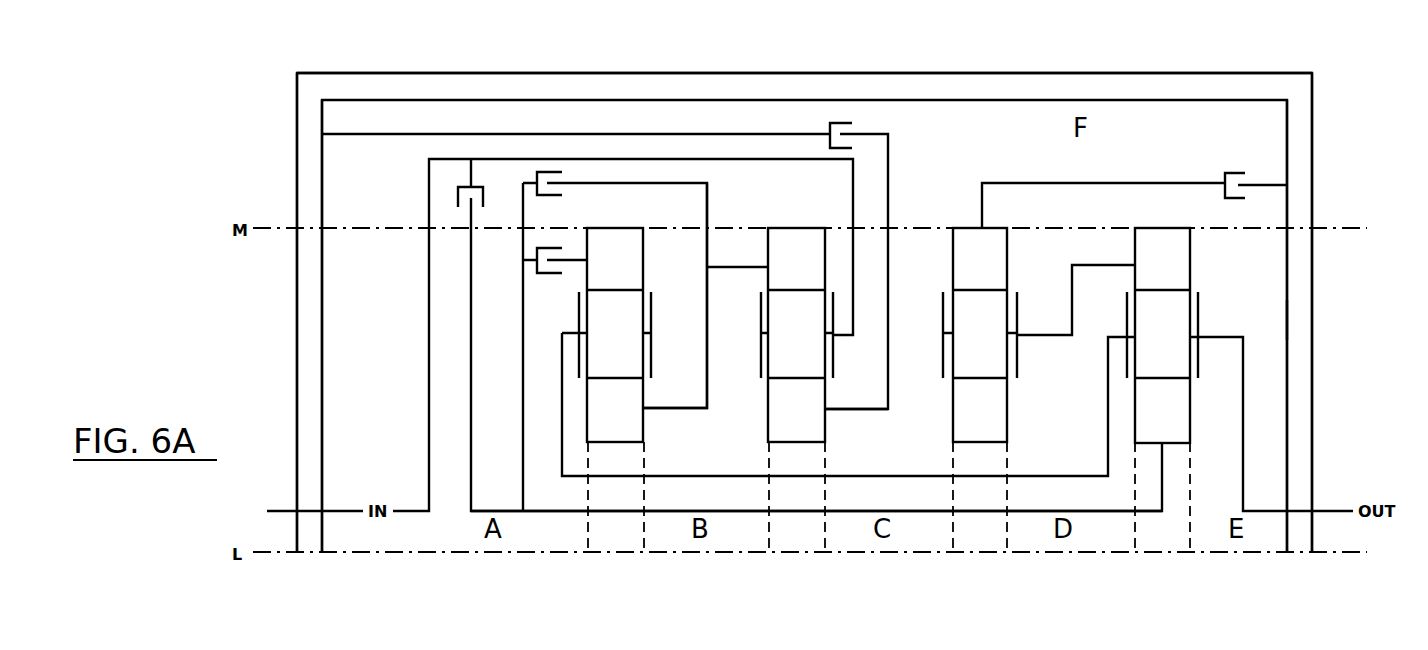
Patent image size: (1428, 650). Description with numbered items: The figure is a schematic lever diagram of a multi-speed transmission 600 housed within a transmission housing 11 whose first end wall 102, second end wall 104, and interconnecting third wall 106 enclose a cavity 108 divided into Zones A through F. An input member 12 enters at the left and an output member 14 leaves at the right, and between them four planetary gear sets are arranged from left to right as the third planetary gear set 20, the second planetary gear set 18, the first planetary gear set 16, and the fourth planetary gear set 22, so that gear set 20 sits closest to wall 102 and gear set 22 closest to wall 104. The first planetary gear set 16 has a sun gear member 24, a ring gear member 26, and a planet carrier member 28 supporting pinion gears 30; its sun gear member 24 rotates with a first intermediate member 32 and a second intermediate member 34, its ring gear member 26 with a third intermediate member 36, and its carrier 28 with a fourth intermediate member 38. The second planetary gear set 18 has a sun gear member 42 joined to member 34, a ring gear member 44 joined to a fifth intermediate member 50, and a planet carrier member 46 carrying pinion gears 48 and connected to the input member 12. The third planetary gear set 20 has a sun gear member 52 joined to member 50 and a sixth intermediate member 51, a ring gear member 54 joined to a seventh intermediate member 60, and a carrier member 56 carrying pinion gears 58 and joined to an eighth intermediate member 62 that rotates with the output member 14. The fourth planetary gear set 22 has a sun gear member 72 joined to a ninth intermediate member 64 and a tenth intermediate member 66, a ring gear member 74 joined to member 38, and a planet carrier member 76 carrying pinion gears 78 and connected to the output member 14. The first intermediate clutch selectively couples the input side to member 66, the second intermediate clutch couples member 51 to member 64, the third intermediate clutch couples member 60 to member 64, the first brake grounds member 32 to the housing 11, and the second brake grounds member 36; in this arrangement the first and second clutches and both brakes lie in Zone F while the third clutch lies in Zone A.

The transmission housing 11 is at (1197, 65).
The input shaft or member 12 is at (413, 507).
The output shaft or member 14 is at (1328, 508).
The first planetary gear set 16 is at (1017, 432).
The second planetary gear set 18 is at (835, 432).
The third planetary gear set 20 is at (650, 432).
The fourth planetary gear set 22 is at (1123, 423).
The sun gear member 24 is at (980, 410).
The ring gear member 26 is at (980, 259).
The planet carrier member 28 is at (942, 327).
The pinion gears 30 is at (980, 334).
The first shaft or intermediate member 32 is at (888, 178).
The second shaft or intermediate member 34 is at (845, 407).
The third shaft or intermediate member 36 is at (1113, 182).
The fourth shaft or intermediate member 38 is at (1097, 263).
The sun gear member 42 is at (796, 410).
The ring gear member 44 is at (796, 259).
The planet carrier member 46 is at (760, 330).
The pinion gears 48 is at (796, 334).
The fifth shaft or intermediate member 50 is at (707, 388).
The sixth shaft or intermediate member 51 is at (682, 183).
The sun gear member 52 is at (615, 410).
The ring gear member 54 is at (615, 259).
The carrier member 56 is at (651, 330).
The pinion gears 58 is at (615, 334).
The seventh shaft or intermediate member 60 is at (568, 258).
The eighth shaft or intermediate member 62 is at (905, 472).
The ninth shaft or intermediate member 64 is at (803, 507).
The tenth shaft or intermediate member 66 is at (471, 367).
The sun gear member 72 is at (1162, 410).
The ring gear member 74 is at (1162, 259).
The planet carrier member 76 is at (1198, 303).
The pinion gears 78 is at (1162, 334).
The first end wall 102 is at (308, 143).
The second end wall 104 is at (1298, 317).
The third wall 106 is at (867, 74).
The cavity 108 is at (1263, 125).
The multi-speed transmission 600 is at (1330, 128).